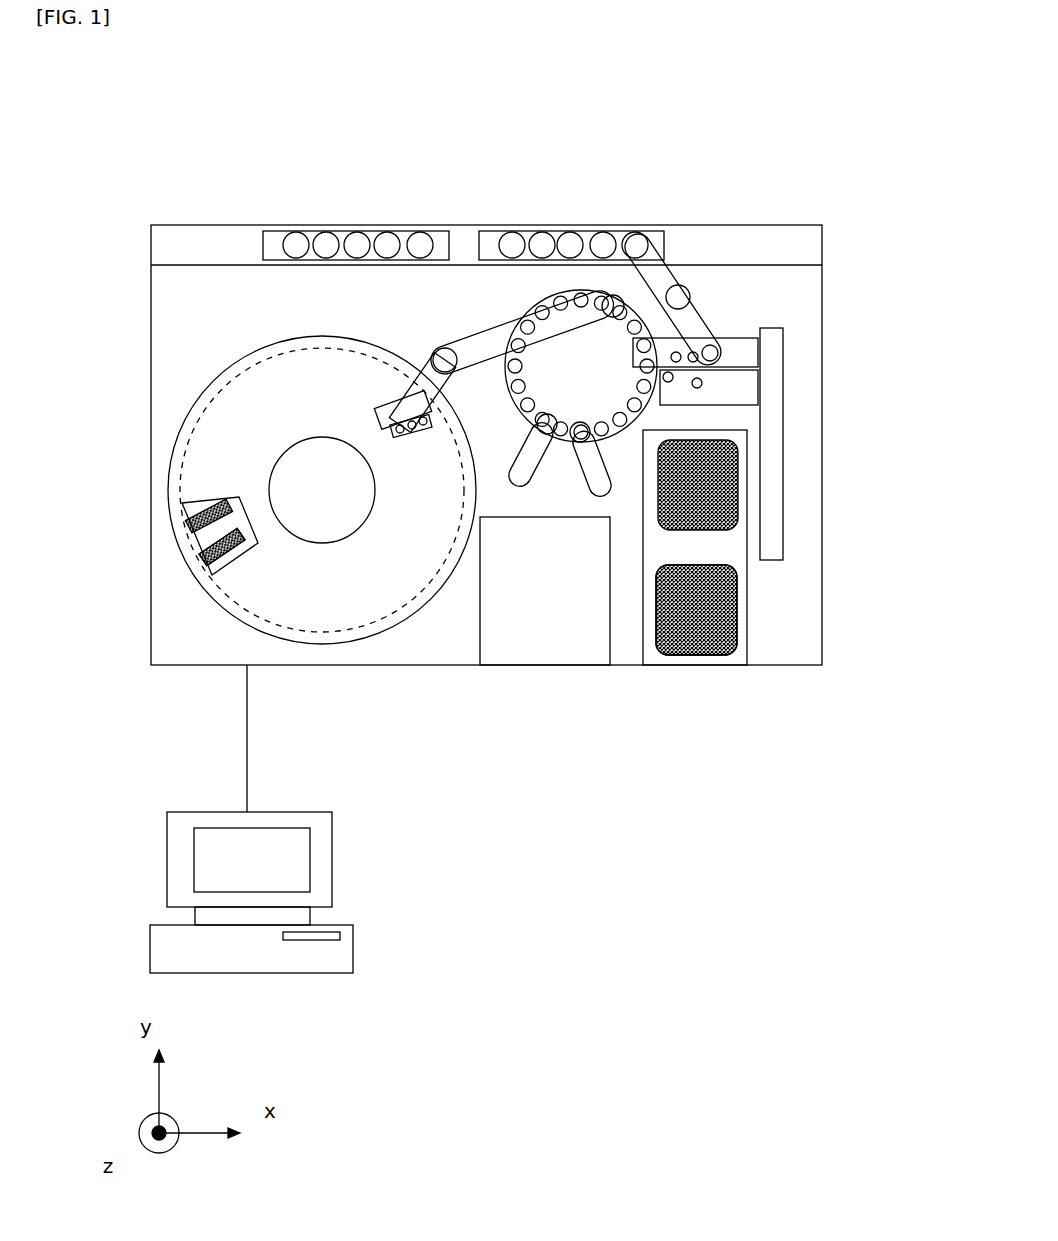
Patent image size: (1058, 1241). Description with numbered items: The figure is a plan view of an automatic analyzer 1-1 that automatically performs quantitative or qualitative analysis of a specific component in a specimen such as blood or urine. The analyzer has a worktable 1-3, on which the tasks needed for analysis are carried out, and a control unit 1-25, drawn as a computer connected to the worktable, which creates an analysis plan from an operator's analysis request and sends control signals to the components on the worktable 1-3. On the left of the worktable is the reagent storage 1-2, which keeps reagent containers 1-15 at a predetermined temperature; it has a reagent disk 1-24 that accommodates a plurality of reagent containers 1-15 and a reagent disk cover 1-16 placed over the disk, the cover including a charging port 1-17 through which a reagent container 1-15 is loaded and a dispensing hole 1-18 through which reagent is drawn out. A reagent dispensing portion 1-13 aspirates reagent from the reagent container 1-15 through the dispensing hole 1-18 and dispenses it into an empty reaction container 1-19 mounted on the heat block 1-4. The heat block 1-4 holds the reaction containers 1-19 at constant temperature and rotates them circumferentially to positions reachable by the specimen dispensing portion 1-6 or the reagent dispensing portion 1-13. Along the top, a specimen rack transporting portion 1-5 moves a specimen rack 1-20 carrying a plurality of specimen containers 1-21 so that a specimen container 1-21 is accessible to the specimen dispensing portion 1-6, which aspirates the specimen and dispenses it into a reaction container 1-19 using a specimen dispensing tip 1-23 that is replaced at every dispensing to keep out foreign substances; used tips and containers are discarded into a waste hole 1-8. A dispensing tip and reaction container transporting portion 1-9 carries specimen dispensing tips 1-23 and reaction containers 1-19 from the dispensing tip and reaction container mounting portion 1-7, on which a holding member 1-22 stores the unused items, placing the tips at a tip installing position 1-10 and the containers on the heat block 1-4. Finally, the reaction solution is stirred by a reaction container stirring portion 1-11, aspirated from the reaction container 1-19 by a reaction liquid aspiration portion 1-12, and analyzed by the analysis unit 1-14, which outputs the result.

The automatic analyzer 1-1 is at (508, 163).
The reagent storage 1-2 is at (248, 353).
The worktable 1-3 is at (822, 283).
The heat block 1-4 is at (572, 290).
The specimen rack transporting portion 1-5 is at (686, 258).
The specimen dispensing portion 1-6 is at (703, 307).
The dispensing tip and reaction container mounting portion 1-7 is at (753, 648).
The waste hole 1-8 is at (738, 337).
The dispensing tip and reaction container transporting portion 1-9 is at (783, 362).
The tip installing position 1-10 is at (668, 377).
The reaction container stirring portion 1-11 is at (697, 383).
The reaction liquid aspiration portion 1-12 is at (517, 477).
The reagent dispensing portion 1-13 is at (463, 345).
The analysis unit 1-14 is at (482, 632).
The reagent container 1-15 is at (210, 577).
The reagent disk cover 1-16 is at (335, 647).
The charging port 1-17 is at (192, 497).
The dispensing hole 1-18 is at (413, 433).
The reaction container 1-19 is at (697, 653).
The specimen rack 1-20 is at (645, 263).
The specimen container 1-21 is at (613, 231).
The holding member 1-22 is at (740, 595).
The specimen dispensing tip 1-23 is at (663, 653).
The reagent disk 1-24 is at (310, 350).
The control unit 1-25 is at (332, 853).